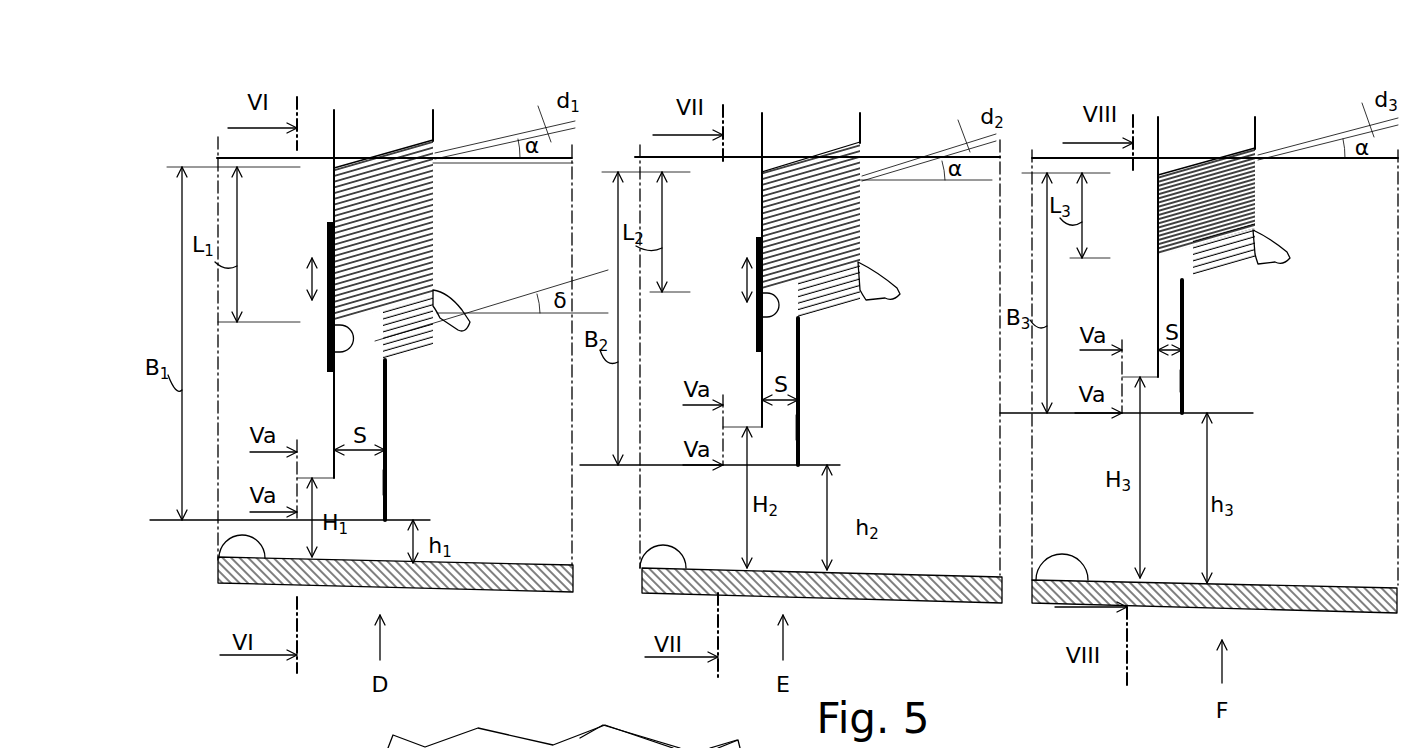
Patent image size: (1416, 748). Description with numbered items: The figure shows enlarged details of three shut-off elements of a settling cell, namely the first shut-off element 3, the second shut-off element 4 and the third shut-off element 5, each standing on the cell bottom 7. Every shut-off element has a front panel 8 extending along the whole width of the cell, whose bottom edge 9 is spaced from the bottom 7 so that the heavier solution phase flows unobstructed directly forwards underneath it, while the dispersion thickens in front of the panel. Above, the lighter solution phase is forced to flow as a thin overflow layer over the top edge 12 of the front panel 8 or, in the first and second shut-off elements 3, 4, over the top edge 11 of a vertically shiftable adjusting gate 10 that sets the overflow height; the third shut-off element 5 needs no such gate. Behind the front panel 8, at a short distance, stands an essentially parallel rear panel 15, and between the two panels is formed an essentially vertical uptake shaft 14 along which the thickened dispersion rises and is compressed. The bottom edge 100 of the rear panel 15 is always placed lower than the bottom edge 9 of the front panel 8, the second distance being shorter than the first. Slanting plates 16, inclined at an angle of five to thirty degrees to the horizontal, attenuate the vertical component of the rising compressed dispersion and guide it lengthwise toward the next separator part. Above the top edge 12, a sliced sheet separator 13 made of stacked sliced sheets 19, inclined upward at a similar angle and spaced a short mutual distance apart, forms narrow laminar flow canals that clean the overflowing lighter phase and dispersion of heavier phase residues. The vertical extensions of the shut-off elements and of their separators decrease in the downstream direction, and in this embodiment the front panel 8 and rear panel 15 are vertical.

The first shut-off element 3 is at (391, 125).
The second shut-off element 4 is at (815, 125).
The third shut-off element 5 is at (1200, 128).
The cell bottom 7 is at (218, 562).
The front panel 8 is at (334, 399).
The bottom edge of the front panel 9 is at (334, 478).
The adjusting gate 10 is at (334, 334).
The top edge of the adjusting gate 11 is at (330, 222).
The top edge of the front panel 12 is at (334, 351).
The sliced sheet separator 13 is at (470, 137).
The uptake shaft 14 is at (357, 412).
The rear panel 15 is at (387, 481).
The slanting plates 16 is at (853, 291).
The sliced sheets 19 is at (334, 173).
The bottom edge of the rear panel 100 is at (387, 516).